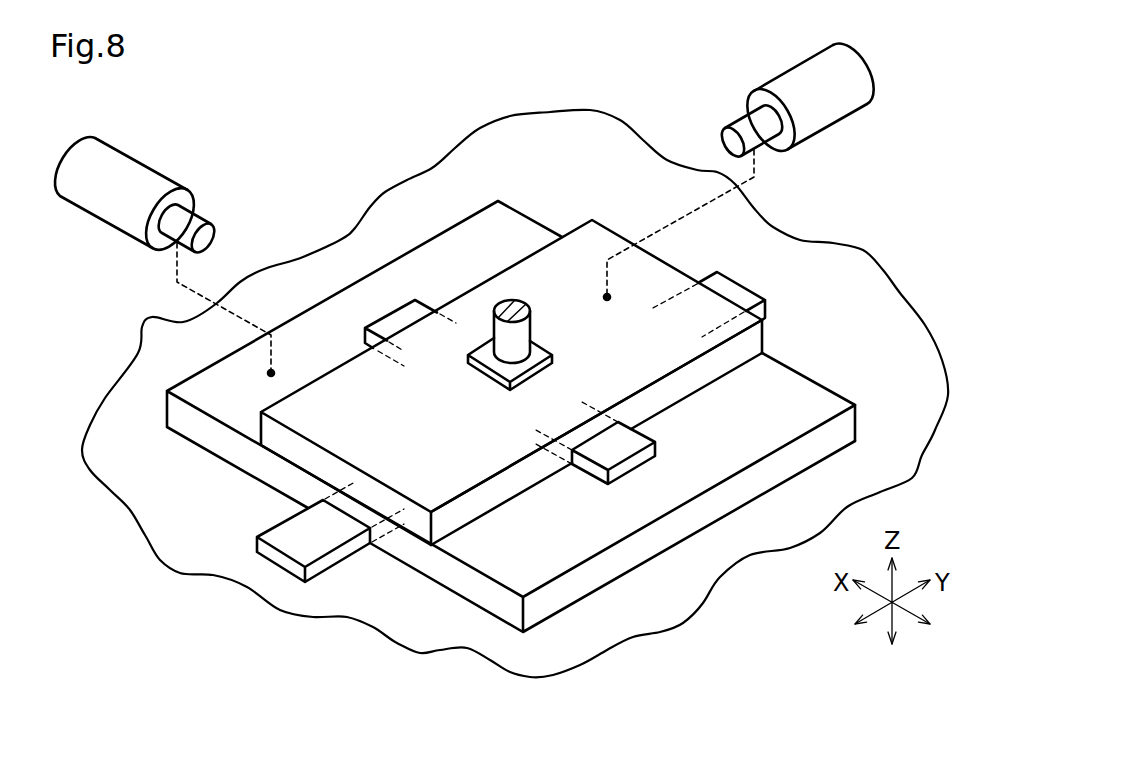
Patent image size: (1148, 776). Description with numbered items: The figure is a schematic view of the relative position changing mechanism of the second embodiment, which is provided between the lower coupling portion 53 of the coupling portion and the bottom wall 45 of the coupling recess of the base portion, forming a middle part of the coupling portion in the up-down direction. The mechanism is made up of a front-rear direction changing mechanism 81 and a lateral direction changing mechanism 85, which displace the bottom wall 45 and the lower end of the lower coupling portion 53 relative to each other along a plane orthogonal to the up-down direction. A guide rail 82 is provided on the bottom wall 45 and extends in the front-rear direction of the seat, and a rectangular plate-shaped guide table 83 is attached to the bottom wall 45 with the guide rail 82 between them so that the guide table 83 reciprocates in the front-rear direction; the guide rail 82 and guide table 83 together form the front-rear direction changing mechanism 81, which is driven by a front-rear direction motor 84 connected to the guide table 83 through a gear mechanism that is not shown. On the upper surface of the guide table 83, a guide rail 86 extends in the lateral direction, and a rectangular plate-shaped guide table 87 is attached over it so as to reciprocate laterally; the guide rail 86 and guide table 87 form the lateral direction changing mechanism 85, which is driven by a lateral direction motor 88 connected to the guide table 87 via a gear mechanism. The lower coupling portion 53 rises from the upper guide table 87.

The bottom wall 45 is at (380, 212).
The front-rear direction changing mechanism 81 is at (441, 566).
The guide rail 82 is at (741, 288).
The guide table 83 is at (810, 390).
The front-rear direction motor 84 is at (128, 152).
The lateral direction changing mechanism 85 is at (586, 254).
The guide rail 86 is at (413, 308).
The guide table 87 is at (500, 494).
The lateral direction motor 88 is at (776, 78).
The lower coupling portion 53 is at (543, 350).